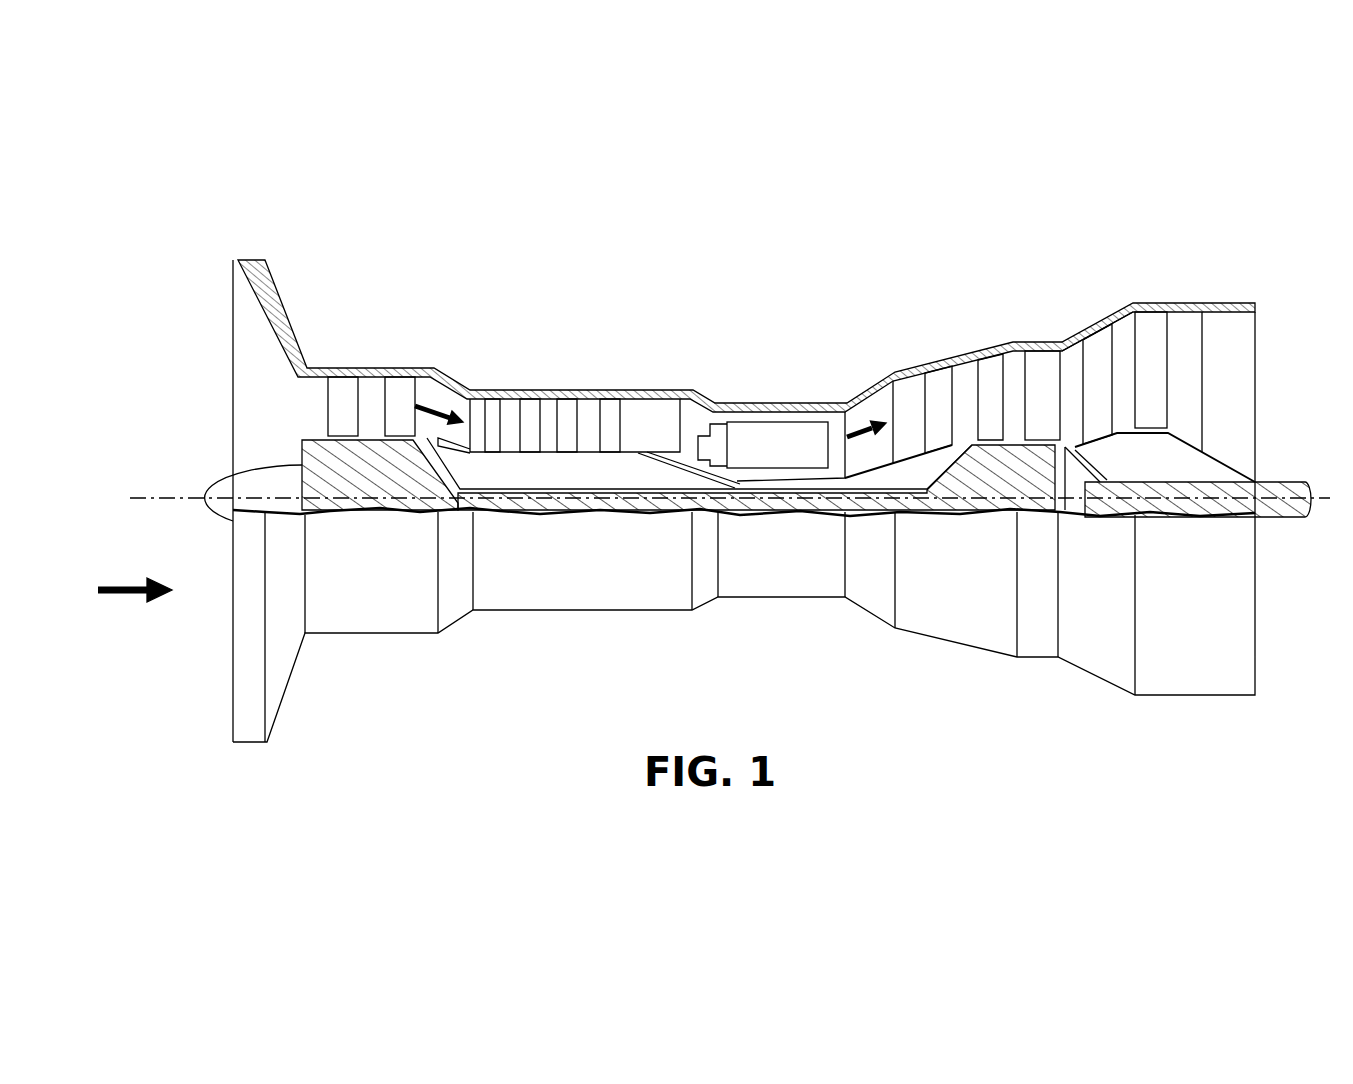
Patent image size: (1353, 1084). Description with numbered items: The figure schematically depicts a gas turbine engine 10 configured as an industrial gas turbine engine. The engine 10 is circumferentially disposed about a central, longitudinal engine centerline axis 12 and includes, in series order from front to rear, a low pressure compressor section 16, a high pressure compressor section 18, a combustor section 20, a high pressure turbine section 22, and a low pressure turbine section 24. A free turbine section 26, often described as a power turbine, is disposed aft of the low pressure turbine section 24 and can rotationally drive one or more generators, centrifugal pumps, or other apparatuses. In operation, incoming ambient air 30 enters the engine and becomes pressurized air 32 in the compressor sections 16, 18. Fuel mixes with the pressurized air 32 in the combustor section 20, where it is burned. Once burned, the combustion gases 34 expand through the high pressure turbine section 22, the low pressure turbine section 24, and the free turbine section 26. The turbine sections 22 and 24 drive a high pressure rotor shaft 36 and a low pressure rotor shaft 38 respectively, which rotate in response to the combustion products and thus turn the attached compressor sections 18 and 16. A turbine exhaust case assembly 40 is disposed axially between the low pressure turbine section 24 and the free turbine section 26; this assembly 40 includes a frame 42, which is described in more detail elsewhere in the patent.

The gas turbine engine 10 is at (744, 461).
The engine centerline axis 12 is at (170, 497).
The low pressure compressor section 16 is at (364, 345).
The high pressure compressor section 18 is at (601, 353).
The combustor section 20 is at (753, 443).
The high pressure turbine section 22 is at (940, 333).
The low pressure turbine section 24 is at (1017, 318).
The free turbine section 26 is at (1203, 296).
The incoming ambient air 30 is at (132, 583).
The pressurized air 32 is at (440, 420).
The combustion gases 34 is at (856, 418).
The high pressure rotor shaft 36 is at (672, 463).
The low pressure rotor shaft 38 is at (448, 478).
The turbine exhaust case assembly 40 is at (1090, 303).
The frame 42 is at (1015, 668).